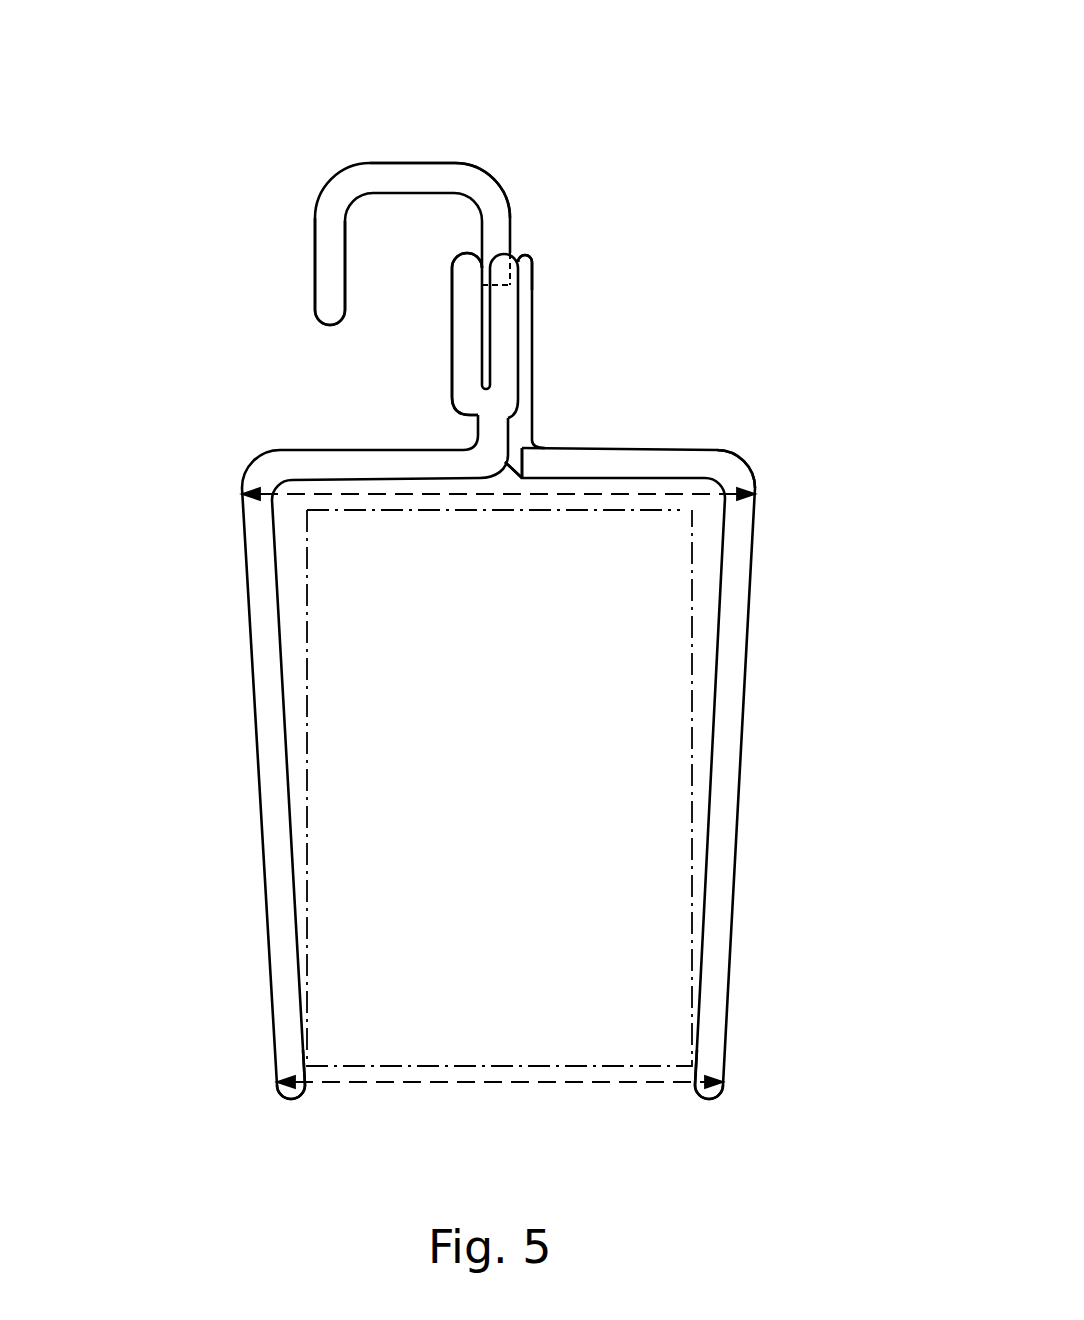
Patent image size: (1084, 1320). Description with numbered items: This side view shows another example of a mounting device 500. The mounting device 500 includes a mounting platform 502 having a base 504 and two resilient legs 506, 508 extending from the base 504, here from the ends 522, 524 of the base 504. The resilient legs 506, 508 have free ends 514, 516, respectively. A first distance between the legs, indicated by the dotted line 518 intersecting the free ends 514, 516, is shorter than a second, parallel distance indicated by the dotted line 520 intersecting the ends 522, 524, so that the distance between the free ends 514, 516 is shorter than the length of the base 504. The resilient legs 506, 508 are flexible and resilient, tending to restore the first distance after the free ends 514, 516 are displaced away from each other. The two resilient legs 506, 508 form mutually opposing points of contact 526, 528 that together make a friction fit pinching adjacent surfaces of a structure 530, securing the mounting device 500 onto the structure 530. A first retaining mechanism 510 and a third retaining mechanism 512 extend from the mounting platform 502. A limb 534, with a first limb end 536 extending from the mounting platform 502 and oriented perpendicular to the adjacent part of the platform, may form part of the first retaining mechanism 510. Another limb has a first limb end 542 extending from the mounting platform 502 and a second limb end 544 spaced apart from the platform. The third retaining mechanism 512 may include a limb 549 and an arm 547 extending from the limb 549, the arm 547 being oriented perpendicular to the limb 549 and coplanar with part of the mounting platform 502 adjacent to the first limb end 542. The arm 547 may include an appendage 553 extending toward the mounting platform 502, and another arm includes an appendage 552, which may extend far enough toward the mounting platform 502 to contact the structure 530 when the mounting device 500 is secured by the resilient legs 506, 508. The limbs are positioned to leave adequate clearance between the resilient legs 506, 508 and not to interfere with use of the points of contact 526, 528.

The mounting device 500 is at (822, 90).
The mounting platform 502 is at (690, 435).
The base 504 is at (569, 410).
The resilient leg 506 is at (270, 763).
The resilient leg 508 is at (733, 759).
The first retaining mechanism 510 is at (434, 337).
The third retaining mechanism 512 is at (466, 138).
The free end 514 is at (268, 1099).
The free end 516 is at (722, 1105).
The dotted line 518 is at (578, 1083).
The dotted line 520 is at (633, 495).
The end 522 is at (258, 477).
The end 524 is at (738, 465).
The point of contact 526 is at (303, 1070).
The point of contact 528 is at (697, 1070).
The structure 530 is at (513, 782).
The limb 534 is at (448, 432).
The first limb end 536 is at (483, 457).
The first limb end 542 is at (538, 442).
The second limb end 544 is at (527, 268).
The arm 547 is at (418, 162).
The limb 549 is at (499, 165).
The appendage 552 is at (462, 308).
The appendage 553 is at (316, 280).